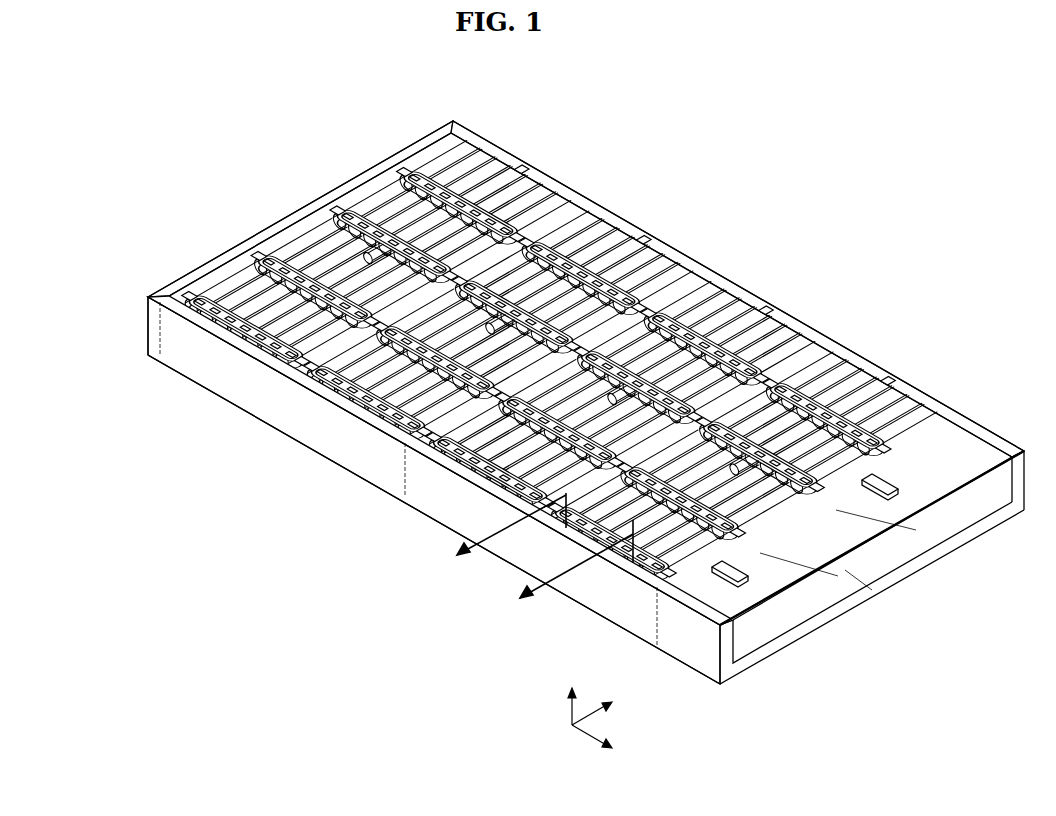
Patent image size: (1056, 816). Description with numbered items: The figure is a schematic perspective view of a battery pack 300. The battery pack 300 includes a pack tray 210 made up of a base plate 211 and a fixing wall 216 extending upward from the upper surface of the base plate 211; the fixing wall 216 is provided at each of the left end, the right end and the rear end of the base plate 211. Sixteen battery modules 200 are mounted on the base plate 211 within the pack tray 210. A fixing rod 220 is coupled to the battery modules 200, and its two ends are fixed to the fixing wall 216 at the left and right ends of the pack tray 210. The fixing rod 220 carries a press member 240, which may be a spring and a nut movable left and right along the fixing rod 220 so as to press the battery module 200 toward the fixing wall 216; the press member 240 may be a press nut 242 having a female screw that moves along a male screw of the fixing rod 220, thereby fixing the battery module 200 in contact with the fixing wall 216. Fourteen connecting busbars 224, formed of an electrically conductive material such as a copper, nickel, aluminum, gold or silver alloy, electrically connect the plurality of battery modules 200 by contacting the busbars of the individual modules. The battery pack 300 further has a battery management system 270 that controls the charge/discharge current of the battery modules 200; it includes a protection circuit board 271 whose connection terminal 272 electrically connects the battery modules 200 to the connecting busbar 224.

The battery pack 300 is at (222, 71).
The pack tray 210 is at (586, 403).
The base plate 211 is at (777, 620).
The fixing wall 216 is at (930, 398).
The battery management system 270 is at (862, 568).
The protection circuit board 271 is at (797, 577).
The connection terminal 272 is at (867, 497).
The battery module 200 is at (591, 341).
The press member 240 is at (591, 341).
The press nut 242 is at (722, 466).
The fixing rod 220 is at (443, 270).
The connecting busbar 224 is at (403, 172).